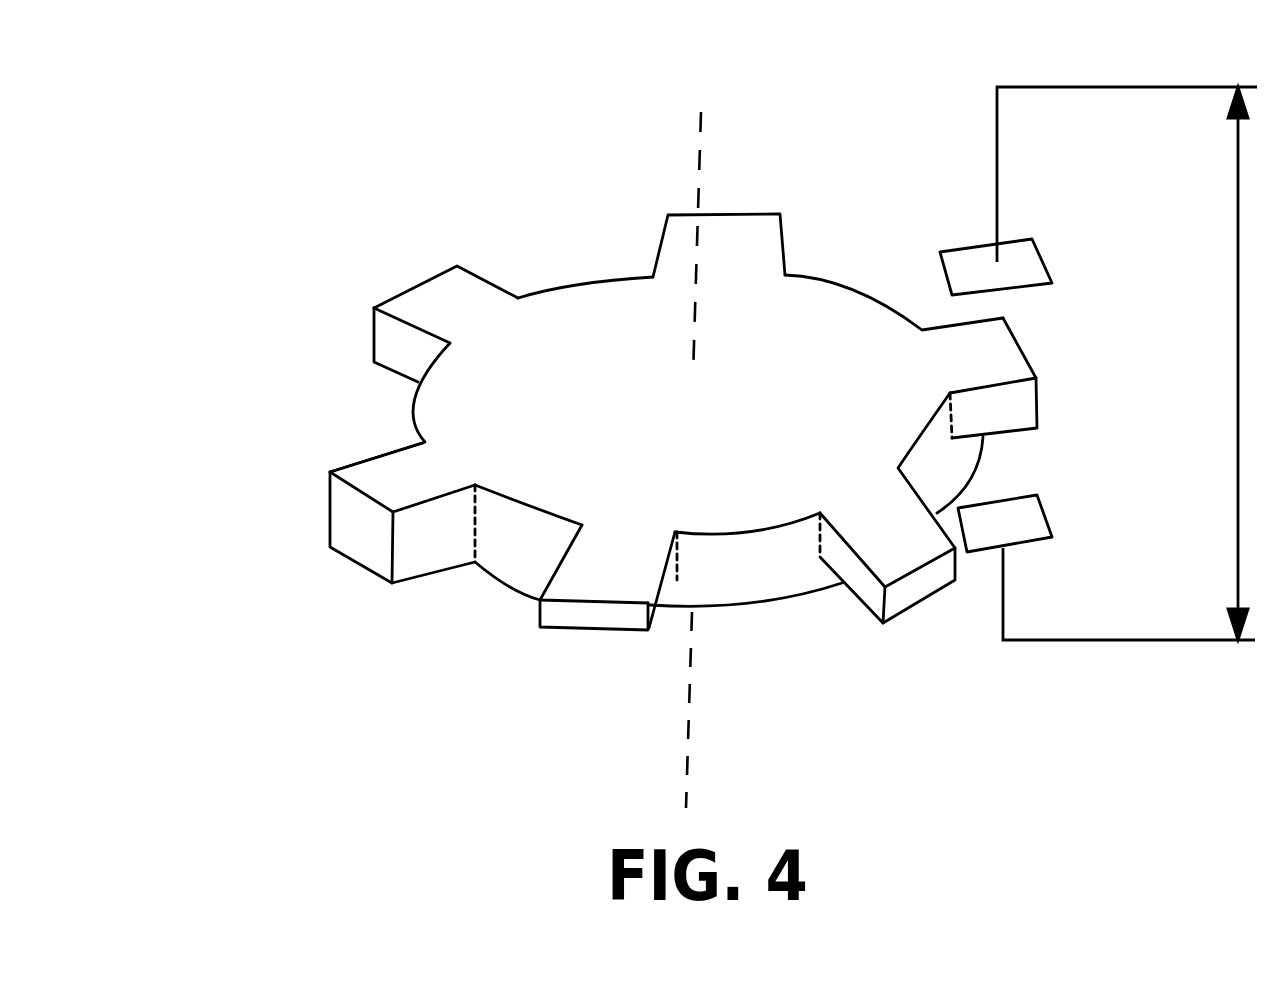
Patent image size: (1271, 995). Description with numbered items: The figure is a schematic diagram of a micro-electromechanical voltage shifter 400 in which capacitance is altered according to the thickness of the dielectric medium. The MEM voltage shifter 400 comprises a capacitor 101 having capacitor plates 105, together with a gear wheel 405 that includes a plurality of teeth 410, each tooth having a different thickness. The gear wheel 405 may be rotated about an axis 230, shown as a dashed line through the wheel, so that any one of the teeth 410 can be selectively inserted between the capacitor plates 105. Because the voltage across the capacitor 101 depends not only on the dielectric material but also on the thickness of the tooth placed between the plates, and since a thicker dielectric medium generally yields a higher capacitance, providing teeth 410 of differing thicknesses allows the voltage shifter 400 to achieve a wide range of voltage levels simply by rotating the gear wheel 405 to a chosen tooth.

The MEM voltage shifter 400 is at (110, 827).
The gear wheel 405 is at (395, 642).
The teeth 410 is at (755, 215).
The axis 230 is at (700, 107).
The capacitor plates 105 is at (1018, 237).
The capacitor 101 is at (1107, 567).